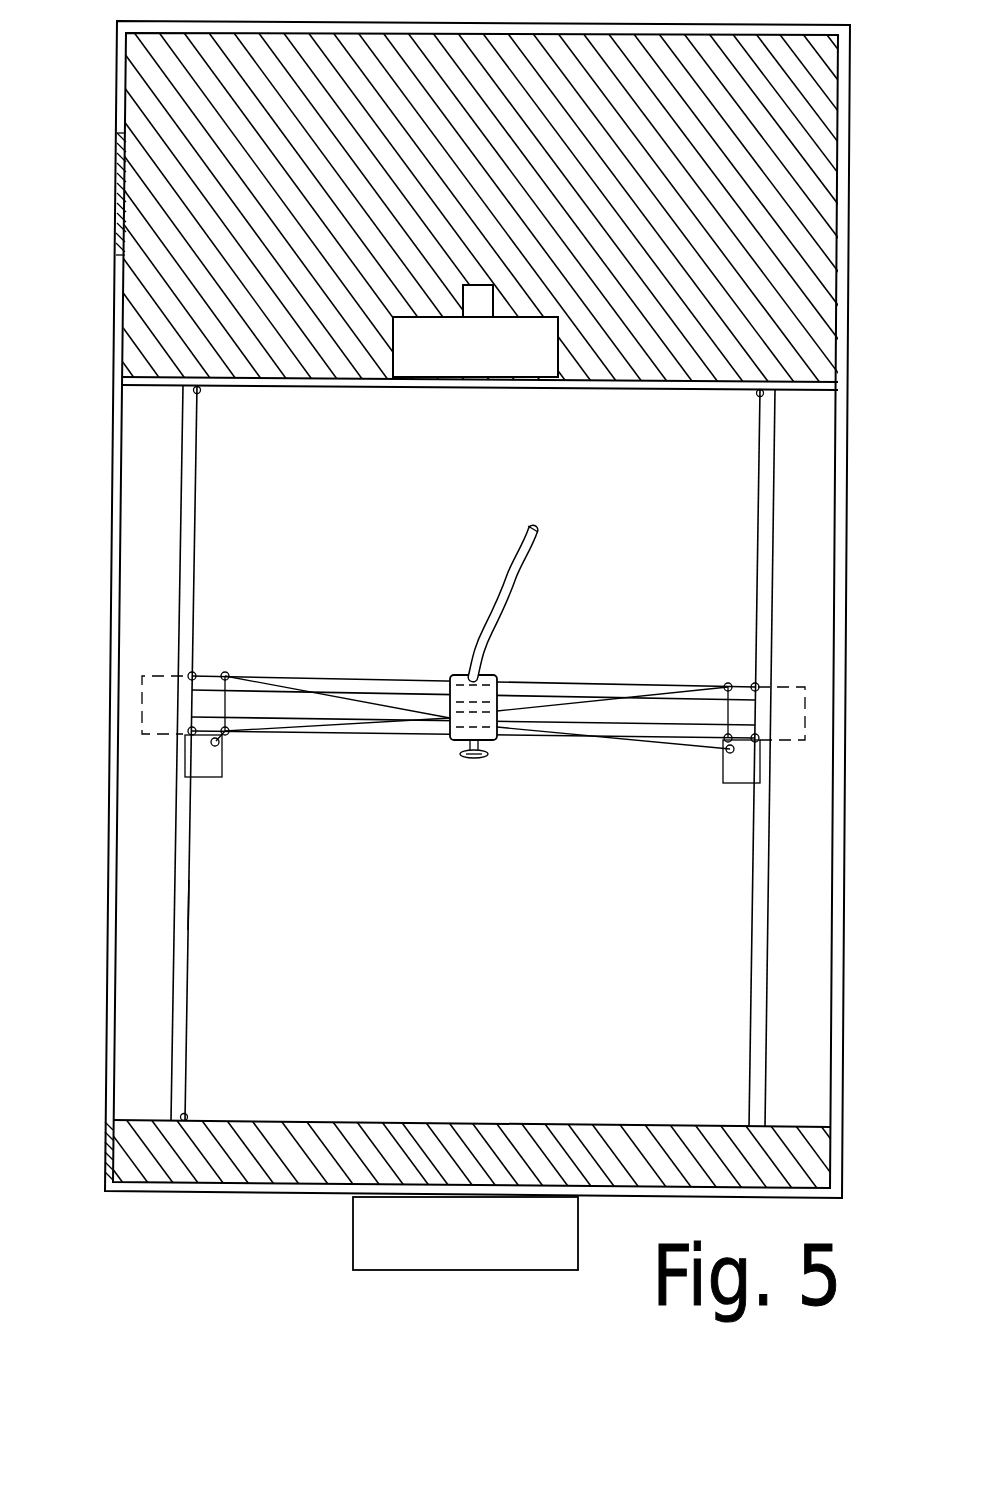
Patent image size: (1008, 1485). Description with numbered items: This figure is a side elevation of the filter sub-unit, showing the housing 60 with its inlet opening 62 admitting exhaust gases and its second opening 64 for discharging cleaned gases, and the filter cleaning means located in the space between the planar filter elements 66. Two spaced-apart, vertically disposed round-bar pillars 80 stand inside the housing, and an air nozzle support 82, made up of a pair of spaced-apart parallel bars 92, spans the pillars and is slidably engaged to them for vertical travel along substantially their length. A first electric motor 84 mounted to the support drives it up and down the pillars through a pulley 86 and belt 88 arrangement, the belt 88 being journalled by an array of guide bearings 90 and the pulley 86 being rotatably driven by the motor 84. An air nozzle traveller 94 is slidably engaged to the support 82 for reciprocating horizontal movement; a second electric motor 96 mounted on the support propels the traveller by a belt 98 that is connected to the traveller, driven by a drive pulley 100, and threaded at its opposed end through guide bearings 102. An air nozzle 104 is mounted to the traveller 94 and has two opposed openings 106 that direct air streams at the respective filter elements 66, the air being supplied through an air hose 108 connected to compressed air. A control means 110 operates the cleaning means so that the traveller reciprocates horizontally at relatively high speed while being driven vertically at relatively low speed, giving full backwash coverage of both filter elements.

The housing 60 is at (845, 256).
The opening 62 is at (105, 1162).
The second opening 64 is at (117, 200).
The planar filter elements 66 is at (330, 540).
The pillars 80 is at (188, 563).
The air nozzle support 82 is at (556, 682).
The first electric motor 84 is at (208, 777).
The pulley 86 is at (221, 745).
The belt 88 is at (190, 905).
The guide bearings 90 is at (199, 392).
The parallel bars 92 is at (510, 681).
The air nozzle traveller 94 is at (455, 675).
The second electric motor 96 is at (730, 784).
The belt 98 is at (656, 742).
The drive pulley 100 is at (728, 750).
The guide bearings 102 is at (226, 676).
The air nozzle 104 is at (461, 756).
The openings 106 is at (477, 758).
The air hose 108 is at (506, 556).
The control means 110 is at (353, 1226).